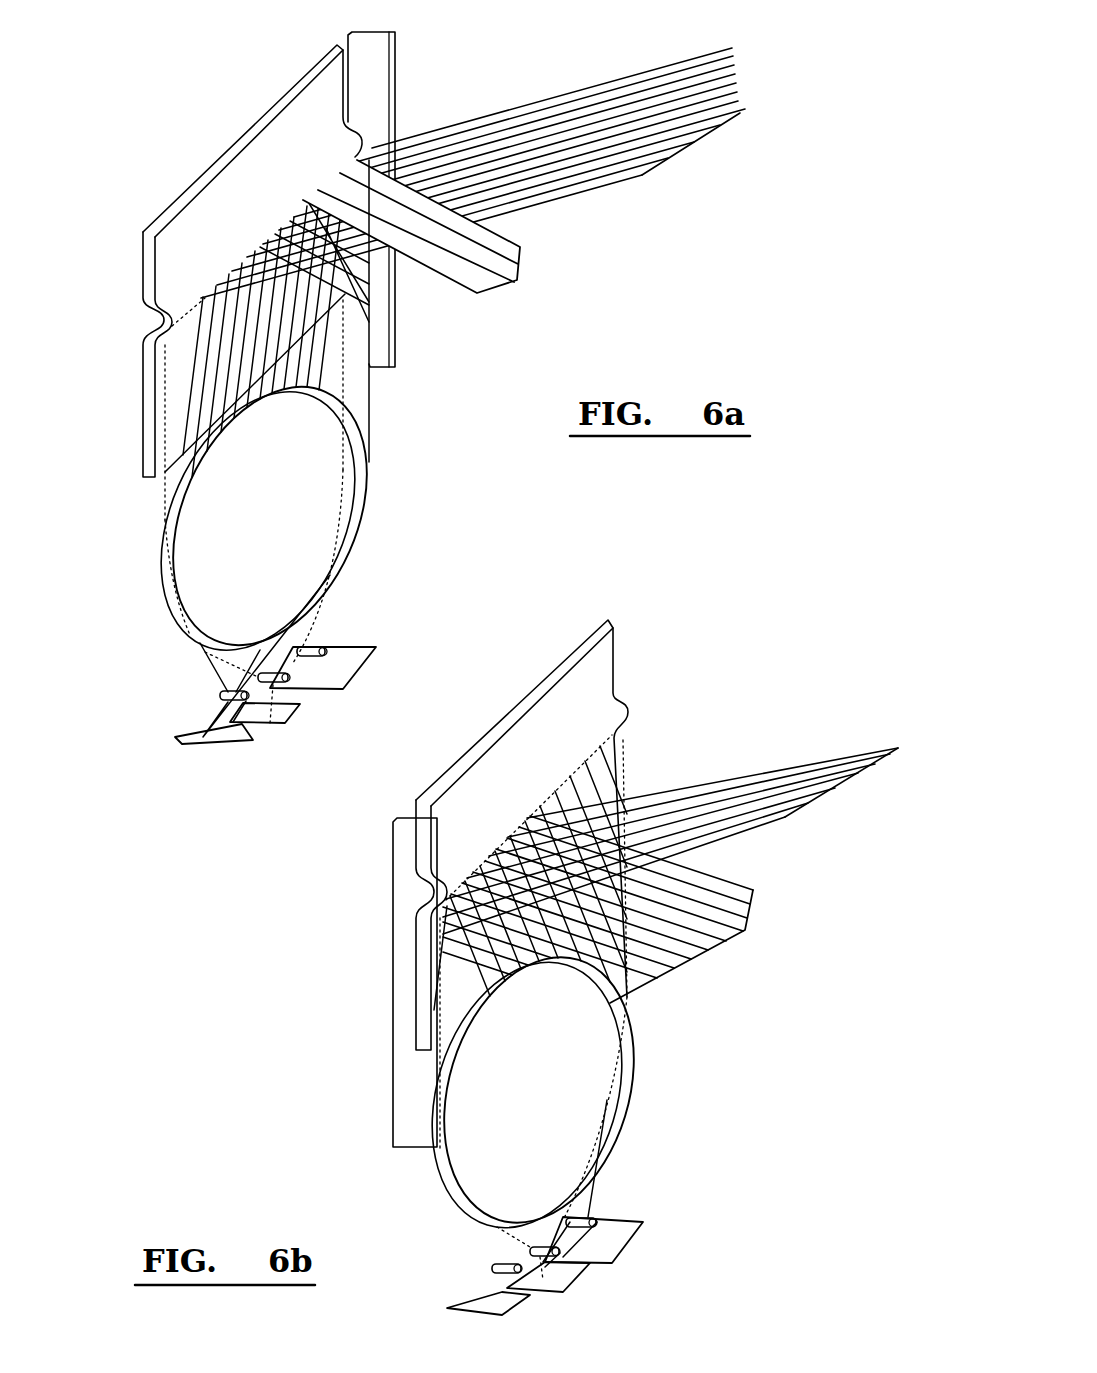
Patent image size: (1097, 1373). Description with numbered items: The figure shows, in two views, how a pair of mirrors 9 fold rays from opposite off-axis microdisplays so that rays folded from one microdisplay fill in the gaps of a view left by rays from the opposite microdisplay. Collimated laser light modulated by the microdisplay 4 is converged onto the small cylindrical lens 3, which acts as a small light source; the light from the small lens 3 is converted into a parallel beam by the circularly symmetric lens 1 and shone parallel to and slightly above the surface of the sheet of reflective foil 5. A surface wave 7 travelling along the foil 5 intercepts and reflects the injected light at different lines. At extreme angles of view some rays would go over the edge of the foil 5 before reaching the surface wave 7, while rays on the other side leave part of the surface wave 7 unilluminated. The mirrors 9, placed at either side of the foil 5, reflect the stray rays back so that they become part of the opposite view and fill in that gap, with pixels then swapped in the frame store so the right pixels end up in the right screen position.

In FIG. 6A, the circularly symmetric lens 1 is at (163, 545).
In FIG. 6B, the circularly symmetric lens 1 is at (641, 1066).
In FIG. 6A, the small cylindrical lens 3 is at (228, 702).
In FIG. 6A, the microdisplay 4 is at (333, 670).
In FIG. 6A, the sheet of reflective foil 5 is at (143, 268).
In FIG. 6B, the sheet of reflective foil 5 is at (513, 705).
In FIG. 6A, the surface wave 7 is at (157, 323).
In FIG. 6B, the surface wave 7 is at (628, 712).
In FIG. 6A, the mirrors 9 is at (384, 88).
In FIG. 6B, the mirrors 9 is at (396, 930).